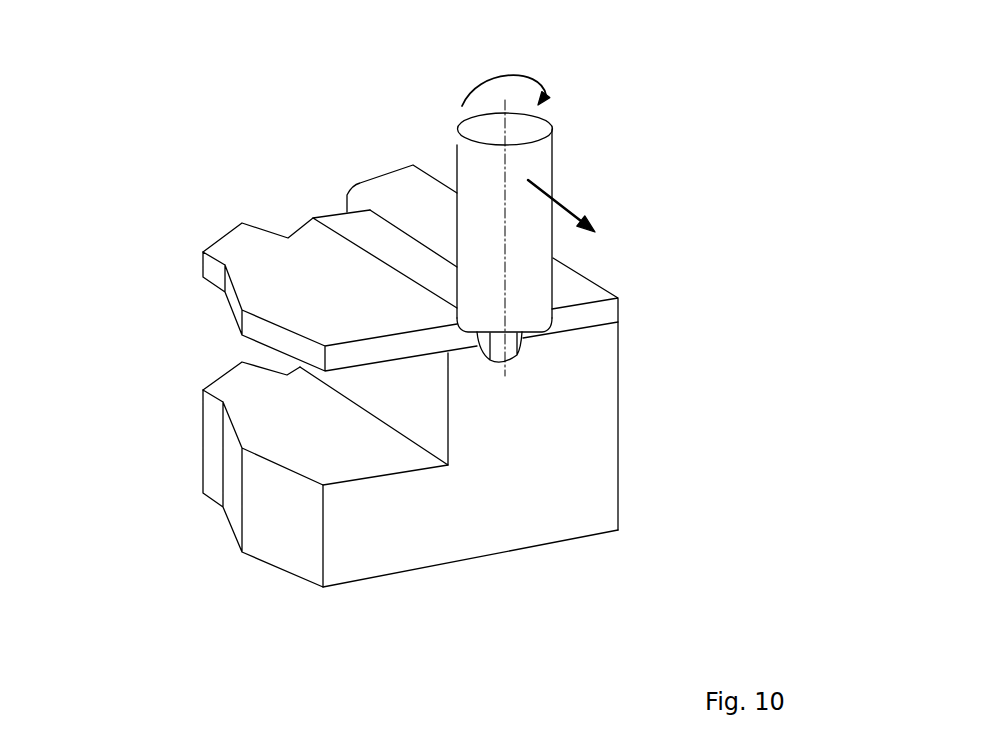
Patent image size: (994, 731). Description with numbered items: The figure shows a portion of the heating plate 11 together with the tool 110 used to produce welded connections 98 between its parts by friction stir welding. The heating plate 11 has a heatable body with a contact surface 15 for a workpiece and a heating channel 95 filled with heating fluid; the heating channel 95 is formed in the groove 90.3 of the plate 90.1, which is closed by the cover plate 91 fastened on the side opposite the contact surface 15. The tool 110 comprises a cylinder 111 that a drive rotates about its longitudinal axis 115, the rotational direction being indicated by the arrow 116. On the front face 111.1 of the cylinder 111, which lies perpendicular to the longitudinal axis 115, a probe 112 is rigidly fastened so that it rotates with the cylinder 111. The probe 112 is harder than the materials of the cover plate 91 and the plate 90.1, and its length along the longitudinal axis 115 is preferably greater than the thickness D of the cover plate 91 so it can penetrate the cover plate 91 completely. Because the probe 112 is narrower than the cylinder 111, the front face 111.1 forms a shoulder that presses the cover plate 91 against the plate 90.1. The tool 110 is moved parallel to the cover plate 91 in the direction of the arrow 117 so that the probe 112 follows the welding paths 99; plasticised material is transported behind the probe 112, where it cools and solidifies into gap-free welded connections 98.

The heating plate 11 is at (328, 45).
The contact surface 15 is at (578, 545).
The plate 90.1 is at (588, 460).
The groove 90.3 is at (448, 418).
The cover plate 91 is at (235, 248).
The heating channel 95 is at (319, 430).
The welded connection 98 is at (337, 223).
The welding path 99 is at (336, 204).
The tool 110 is at (590, 154).
The cylinder 111 is at (537, 278).
The front face 111.1 is at (458, 326).
The probe 112 is at (513, 348).
The longitudinal axis 115 is at (500, 128).
The arrow indicating rotational direction 116 is at (499, 66).
The arrow indicating direction of movement 117 is at (567, 208).
The thickness of the cover plate D is at (620, 296).